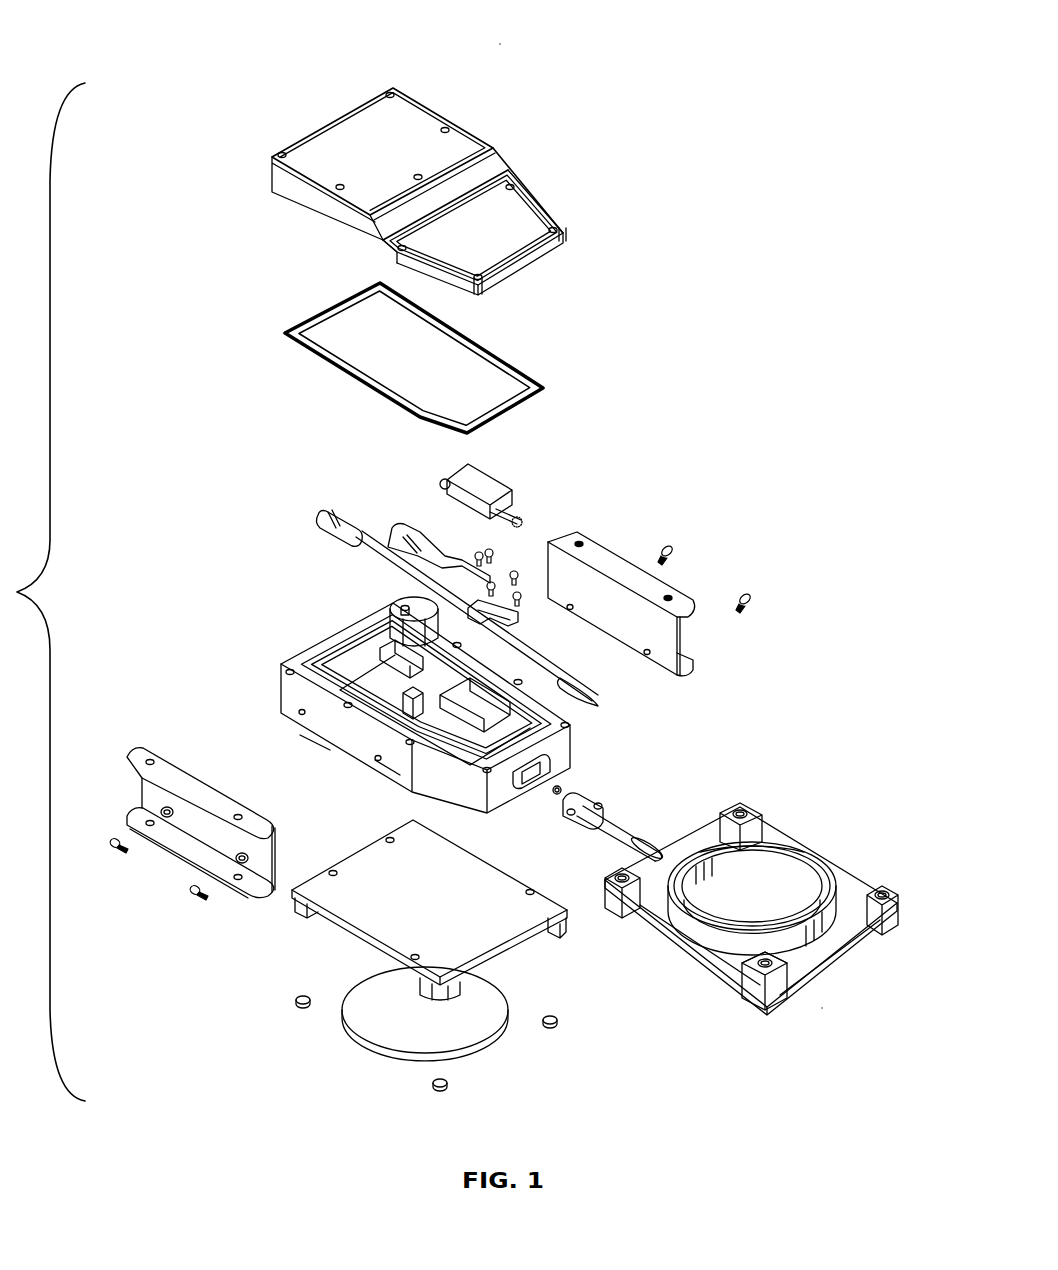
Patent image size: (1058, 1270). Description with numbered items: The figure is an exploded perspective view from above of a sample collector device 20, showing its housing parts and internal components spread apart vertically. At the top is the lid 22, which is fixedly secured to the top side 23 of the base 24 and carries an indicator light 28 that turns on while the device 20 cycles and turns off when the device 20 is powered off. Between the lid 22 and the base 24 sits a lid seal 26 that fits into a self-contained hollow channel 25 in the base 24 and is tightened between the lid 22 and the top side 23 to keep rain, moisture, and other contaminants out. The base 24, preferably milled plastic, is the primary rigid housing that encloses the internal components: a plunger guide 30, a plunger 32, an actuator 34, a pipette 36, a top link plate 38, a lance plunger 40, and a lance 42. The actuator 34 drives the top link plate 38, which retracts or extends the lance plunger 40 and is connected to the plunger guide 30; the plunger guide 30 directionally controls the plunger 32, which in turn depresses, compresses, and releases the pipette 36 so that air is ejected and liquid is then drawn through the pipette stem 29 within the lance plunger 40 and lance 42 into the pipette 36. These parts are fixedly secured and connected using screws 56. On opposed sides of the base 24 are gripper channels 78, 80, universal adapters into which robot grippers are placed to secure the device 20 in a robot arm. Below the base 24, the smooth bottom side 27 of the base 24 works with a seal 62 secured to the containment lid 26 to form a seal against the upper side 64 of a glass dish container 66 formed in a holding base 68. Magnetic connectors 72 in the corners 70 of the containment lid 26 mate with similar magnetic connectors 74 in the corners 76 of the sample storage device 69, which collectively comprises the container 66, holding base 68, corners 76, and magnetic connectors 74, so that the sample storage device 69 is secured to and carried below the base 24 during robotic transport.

The sample collector device 20 is at (500, 44).
The lid 22 is at (343, 162).
The top side 23 is at (380, 762).
The base 24 is at (284, 690).
The self-contained hollow channel 25 is at (404, 740).
The containment lid 26 is at (330, 303).
The bottom side 27 is at (396, 787).
The indicator light 28 is at (421, 174).
The pipette stem 29 is at (382, 563).
The plunger guide 30 is at (420, 534).
The plunger 32 is at (410, 607).
The actuator 34 is at (452, 472).
The pipette 36 is at (330, 525).
The top link plate 38 is at (522, 620).
The lance plunger 40 is at (604, 690).
The lance 42 is at (620, 822).
The screws 56 is at (520, 592).
The seal 62 is at (465, 1025).
The upper side 64 is at (828, 888).
The container 66 is at (787, 852).
The holding base 68 is at (840, 966).
The sample storage device 69 is at (820, 1002).
The corners 70 is at (292, 903).
The magnetic connectors 72 is at (432, 1086).
The magnetic connectors 74 is at (897, 898).
The corners 76 is at (740, 980).
The gripper channel 78 is at (148, 798).
The gripper channel 80 is at (604, 552).